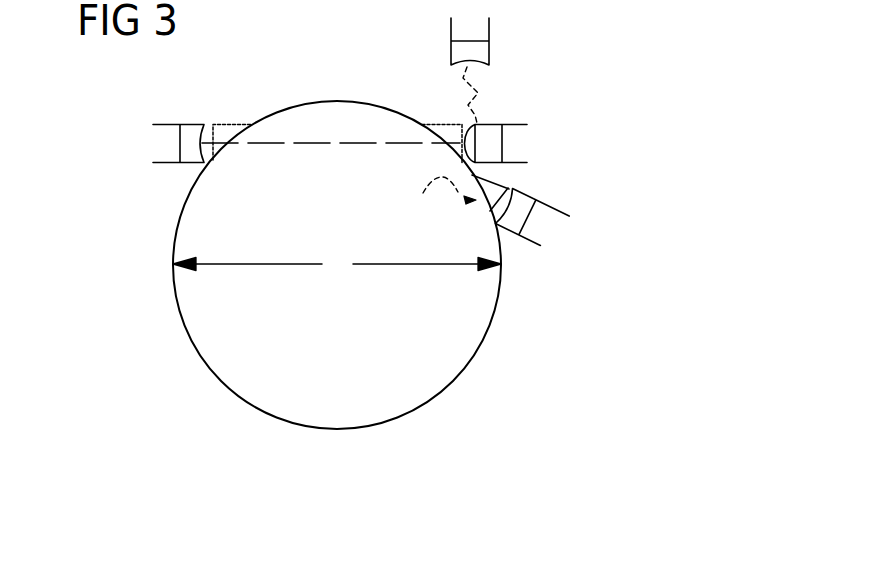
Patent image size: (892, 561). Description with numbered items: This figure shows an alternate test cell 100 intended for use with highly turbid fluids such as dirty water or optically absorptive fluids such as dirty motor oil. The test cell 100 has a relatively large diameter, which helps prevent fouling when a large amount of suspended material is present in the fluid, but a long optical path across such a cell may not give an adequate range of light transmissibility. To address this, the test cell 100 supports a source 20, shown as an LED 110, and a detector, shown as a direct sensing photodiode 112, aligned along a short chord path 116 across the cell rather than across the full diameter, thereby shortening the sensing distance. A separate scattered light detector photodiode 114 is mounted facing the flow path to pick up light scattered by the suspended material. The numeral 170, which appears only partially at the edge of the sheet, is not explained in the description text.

The measuring apparatus 20 is at (593, 133).
The spherical object 100 is at (177, 335).
The first tube 110 is at (494, 124).
The second tube 112 is at (183, 123).
The third tube 114 is at (528, 196).
The tube axis 116 is at (357, 143).
The partially visible numeral 170 is at (443, 558).